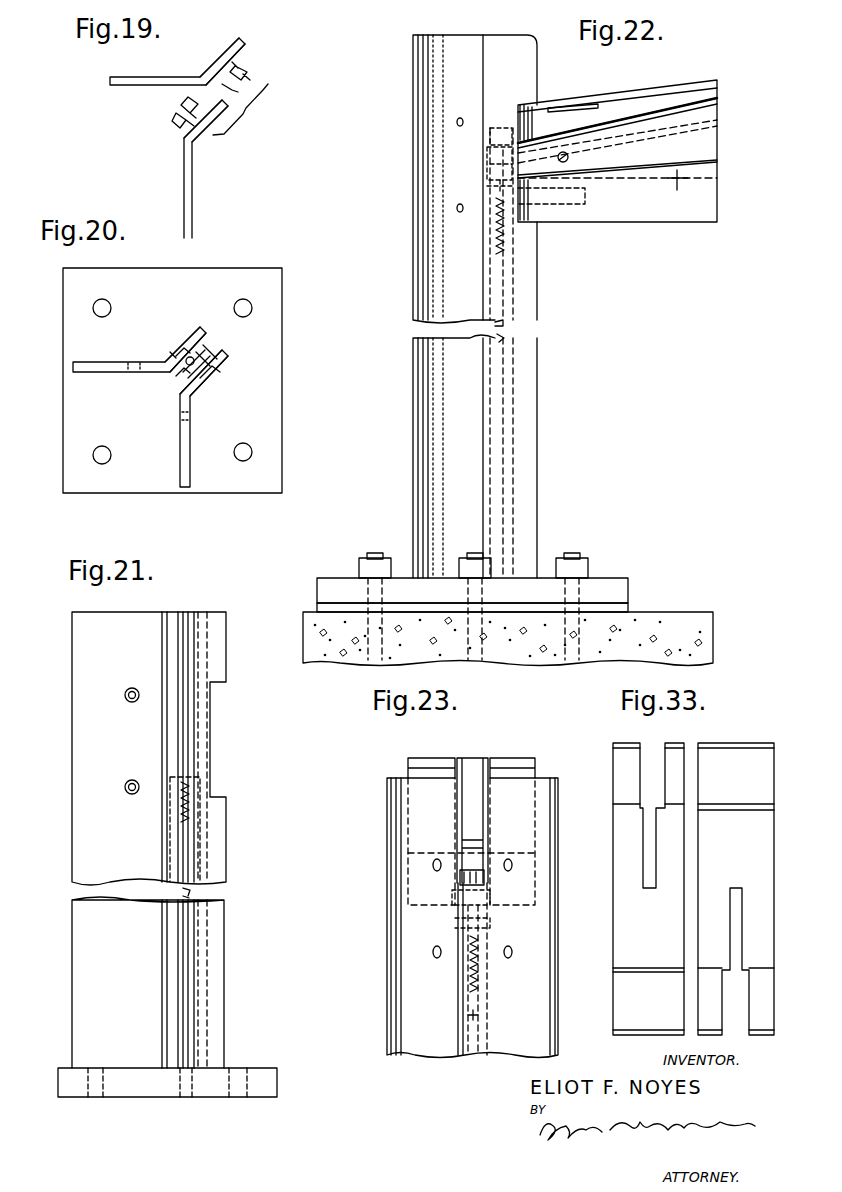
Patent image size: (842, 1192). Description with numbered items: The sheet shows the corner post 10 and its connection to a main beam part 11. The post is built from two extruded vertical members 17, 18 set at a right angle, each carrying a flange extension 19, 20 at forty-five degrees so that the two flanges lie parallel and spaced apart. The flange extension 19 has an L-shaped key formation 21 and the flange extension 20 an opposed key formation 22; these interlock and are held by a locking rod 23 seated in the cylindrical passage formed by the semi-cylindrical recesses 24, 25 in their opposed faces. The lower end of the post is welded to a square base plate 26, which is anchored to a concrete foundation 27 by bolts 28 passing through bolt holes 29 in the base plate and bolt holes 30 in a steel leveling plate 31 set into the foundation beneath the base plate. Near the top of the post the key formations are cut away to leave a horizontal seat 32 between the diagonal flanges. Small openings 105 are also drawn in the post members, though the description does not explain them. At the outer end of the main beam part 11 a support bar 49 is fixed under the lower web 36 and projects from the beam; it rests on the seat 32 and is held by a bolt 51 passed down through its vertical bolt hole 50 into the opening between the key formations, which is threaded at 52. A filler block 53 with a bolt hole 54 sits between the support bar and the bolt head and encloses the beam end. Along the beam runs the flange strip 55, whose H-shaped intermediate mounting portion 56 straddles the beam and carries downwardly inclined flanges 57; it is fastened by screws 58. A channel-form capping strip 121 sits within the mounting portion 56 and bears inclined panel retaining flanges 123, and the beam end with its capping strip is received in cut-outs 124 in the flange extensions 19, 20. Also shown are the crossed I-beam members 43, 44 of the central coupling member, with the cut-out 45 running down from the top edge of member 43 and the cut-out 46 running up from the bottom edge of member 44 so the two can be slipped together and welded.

In FIG. 20, the corner post 10 is at (56, 401).
In FIG. 21, the corner post 10 is at (60, 781).
In FIG. 22, the corner post 10 is at (401, 388).
In FIG. 23, the corner post 10 is at (375, 886).
In FIG. 22, the main beam part 11 is at (664, 229).
In FIG. 19, the extruded vertical member 17 is at (148, 86).
In FIG. 20, the extruded vertical member 17 is at (100, 362).
In FIG. 21, the extruded vertical member 17 is at (72, 690).
In FIG. 23, the extruded vertical member 17 is at (393, 948).
In FIG. 19, the extruded vertical member 18 is at (186, 183).
In FIG. 20, the extruded vertical member 18 is at (190, 464).
In FIG. 21, the extruded vertical member 18 is at (188, 612).
In FIG. 22, the extruded vertical member 18 is at (420, 262).
In FIG. 23, the extruded vertical member 18 is at (550, 940).
In FIG. 19, the flange extension 19 is at (213, 72).
In FIG. 20, the flange extension 19 is at (188, 340).
In FIG. 21, the flange extension 19 is at (174, 612).
In FIG. 23, the flange extension 19 is at (446, 1046).
In FIG. 19, the flange extension 20 is at (202, 128).
In FIG. 20, the flange extension 20 is at (200, 378).
In FIG. 21, the flange extension 20 is at (226, 652).
In FIG. 22, the flange extension 20 is at (525, 285).
In FIG. 23, the flange extension 20 is at (490, 1040).
In FIG. 19, the key formation 21 is at (248, 70).
In FIG. 20, the key formation 21 is at (212, 366).
In FIG. 21, the key formation 21 is at (216, 825).
In FIG. 19, the key formation 22 is at (178, 119).
In FIG. 20, the key formation 22 is at (191, 376).
In FIG. 21, the key formation 22 is at (175, 824).
In FIG. 23, the key formation 22 is at (471, 1048).
In FIG. 20, the locking rod 23 is at (200, 355).
In FIG. 21, the locking rod 23 is at (183, 895).
In FIG. 22, the locking rod 23 is at (503, 338).
In FIG. 23, the locking rod 23 is at (480, 1016).
In FIG. 19, the semi-cylindrical recess 24 is at (240, 90).
In FIG. 20, the semi-cylindrical recess 24 is at (200, 376).
In FIG. 19, the semi-cylindrical recess 25 is at (184, 106).
In FIG. 20, the semi-cylindrical recess 25 is at (178, 357).
In FIG. 20, the base plate 26 is at (276, 387).
In FIG. 21, the base plate 26 is at (263, 1068).
In FIG. 22, the base plate 26 is at (630, 590).
In FIG. 22, the concrete foundation 27 is at (690, 614).
In FIG. 22, the bolt 28 is at (395, 540).
In FIG. 20, the bolt hole 29 is at (244, 444).
In FIG. 21, the bolt hole 29 is at (250, 1097).
In FIG. 22, the bolt hole 29 is at (588, 590).
In FIG. 22, the bolt hole 30 is at (583, 606).
In FIG. 22, the leveling plate 31 is at (630, 608).
In FIG. 21, the horizontal seat 32 is at (175, 776).
In FIG. 22, the horizontal seat 32 is at (480, 214).
In FIG. 23, the horizontal seat 32 is at (484, 936).
In FIG. 22, the lower web 36 is at (678, 184).
In FIG. 33, the I-beam member 43 is at (613, 855).
In FIG. 33, the I-beam member 44 is at (744, 752).
In FIG. 33, the cut-out 45 is at (640, 773).
In FIG. 33, the cut-out 46 is at (742, 960).
In FIG. 22, the support bar 49 is at (594, 198).
In FIG. 23, the support bar 49 is at (460, 922).
In FIG. 22, the vertical bolt hole 50 is at (487, 186).
In FIG. 22, the bolt 51 is at (503, 127).
In FIG. 23, the bolt 51 is at (478, 868).
In FIG. 21, the threaded portion 52 is at (180, 806).
In FIG. 22, the threaded portion 52 is at (508, 240).
In FIG. 23, the threaded portion 52 is at (482, 978).
In FIG. 22, the filler block 53 is at (487, 152).
In FIG. 23, the filler block 53 is at (482, 910).
In FIG. 22, the bolt hole 54 is at (490, 164).
In FIG. 22, the flange strip 55 is at (729, 133).
In FIG. 22, the intermediate mounting portion 56 is at (720, 142).
In FIG. 22, the flange 57 is at (718, 158).
In FIG. 22, the screw 58 is at (563, 152).
In FIG. 20, the fastener hole 105 is at (130, 374).
In FIG. 21, the fastener hole 105 is at (125, 780).
In FIG. 22, the fastener hole 105 is at (460, 118).
In FIG. 23, the fastener hole 105 is at (436, 960).
In FIG. 22, the capping strip 121 is at (717, 105).
In FIG. 23, the capping strip 121 is at (480, 758).
In FIG. 22, the panel retaining flange 123 is at (684, 90).
In FIG. 23, the panel retaining flange 123 is at (408, 764).
In FIG. 21, the cut-out 124 is at (215, 694).
In FIG. 22, the cut-out 124 is at (518, 106).